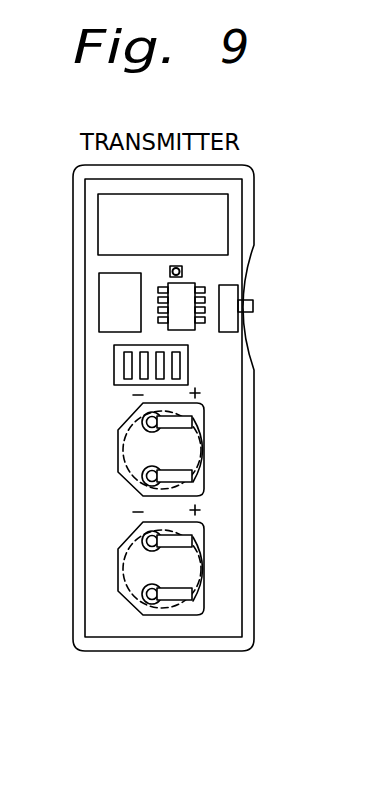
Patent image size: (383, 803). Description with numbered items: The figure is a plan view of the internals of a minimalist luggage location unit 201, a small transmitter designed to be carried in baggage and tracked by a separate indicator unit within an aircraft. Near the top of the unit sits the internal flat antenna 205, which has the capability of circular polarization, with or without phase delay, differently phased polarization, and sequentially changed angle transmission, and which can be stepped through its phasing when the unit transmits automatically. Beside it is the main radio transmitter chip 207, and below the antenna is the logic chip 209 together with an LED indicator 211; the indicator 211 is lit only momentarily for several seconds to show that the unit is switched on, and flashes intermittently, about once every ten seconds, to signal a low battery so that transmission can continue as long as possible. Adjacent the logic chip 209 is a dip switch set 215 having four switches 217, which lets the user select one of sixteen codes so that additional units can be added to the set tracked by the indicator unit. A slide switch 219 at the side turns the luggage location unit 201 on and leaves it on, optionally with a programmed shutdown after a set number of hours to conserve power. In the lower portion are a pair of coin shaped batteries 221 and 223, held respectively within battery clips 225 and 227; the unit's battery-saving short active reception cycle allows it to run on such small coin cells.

The luggage location unit 201 is at (280, 601).
The internal flat antenna 205 is at (110, 213).
The main radio transmitter chip 207 is at (110, 294).
The logic chip 209 is at (192, 290).
The LED indicator 211 is at (183, 272).
The dip switch set 215 is at (188, 376).
The switches 217 is at (143, 352).
The slide switch 219 is at (232, 318).
The coin shaped battery 221 is at (203, 452).
The coin shaped battery 223 is at (203, 571).
The battery clip 225 is at (192, 422).
The battery clip 227 is at (190, 542).